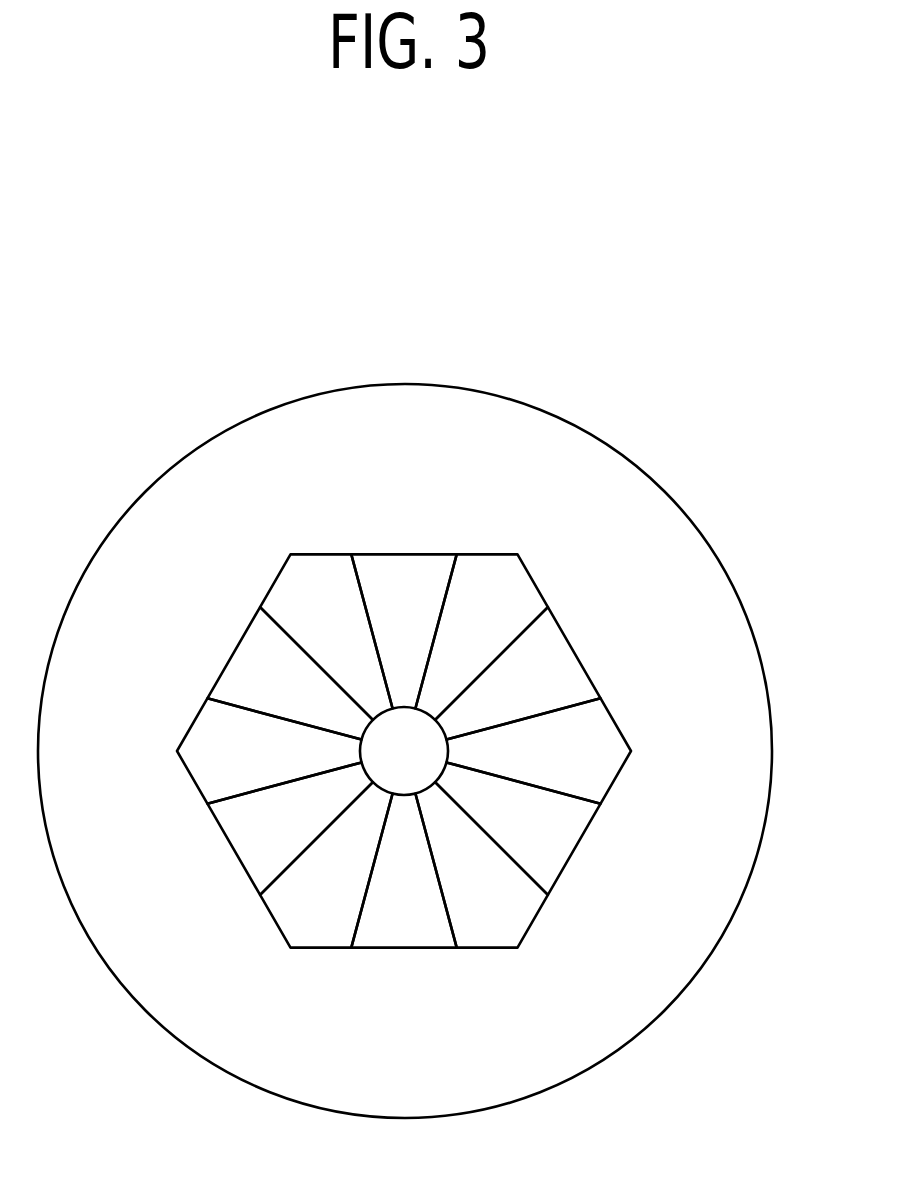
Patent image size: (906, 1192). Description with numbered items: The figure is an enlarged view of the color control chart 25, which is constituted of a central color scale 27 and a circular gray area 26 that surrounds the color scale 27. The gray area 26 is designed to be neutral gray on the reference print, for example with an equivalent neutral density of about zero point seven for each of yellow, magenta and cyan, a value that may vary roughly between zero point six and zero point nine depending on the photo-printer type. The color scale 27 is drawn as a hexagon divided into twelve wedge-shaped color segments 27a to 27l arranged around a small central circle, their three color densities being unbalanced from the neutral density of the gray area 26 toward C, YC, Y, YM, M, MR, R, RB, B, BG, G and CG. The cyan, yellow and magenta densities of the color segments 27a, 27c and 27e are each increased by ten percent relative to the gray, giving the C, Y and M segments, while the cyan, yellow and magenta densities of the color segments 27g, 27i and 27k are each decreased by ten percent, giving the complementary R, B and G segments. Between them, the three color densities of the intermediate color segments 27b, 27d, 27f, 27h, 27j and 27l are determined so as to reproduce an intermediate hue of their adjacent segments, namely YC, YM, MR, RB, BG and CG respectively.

The color control chart 25 is at (593, 430).
The gray area 26 is at (672, 527).
The color scale 27 is at (613, 713).
The color segment 27l is at (610, 753).
The color segment 27a is at (567, 672).
The color segment 27b is at (528, 587).
The color segment 27c is at (407, 563).
The color segment 27d is at (295, 570).
The color segment 27e is at (243, 652).
The color segment 27f is at (195, 755).
The color segment 27g is at (235, 845).
The color segment 27h is at (288, 948).
The color segment 27i is at (390, 950).
The color segment 27j is at (535, 923).
The color segment 27k is at (563, 845).